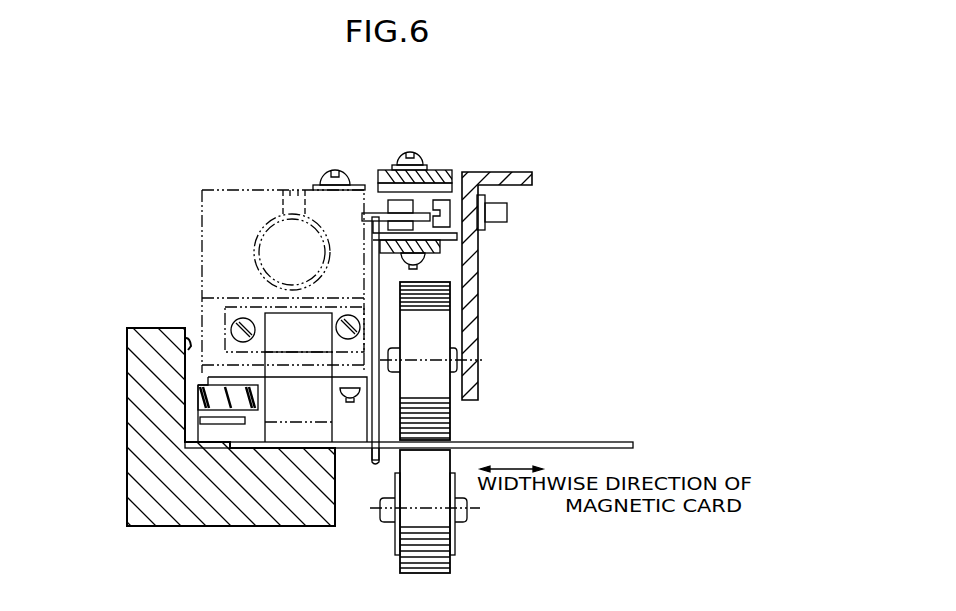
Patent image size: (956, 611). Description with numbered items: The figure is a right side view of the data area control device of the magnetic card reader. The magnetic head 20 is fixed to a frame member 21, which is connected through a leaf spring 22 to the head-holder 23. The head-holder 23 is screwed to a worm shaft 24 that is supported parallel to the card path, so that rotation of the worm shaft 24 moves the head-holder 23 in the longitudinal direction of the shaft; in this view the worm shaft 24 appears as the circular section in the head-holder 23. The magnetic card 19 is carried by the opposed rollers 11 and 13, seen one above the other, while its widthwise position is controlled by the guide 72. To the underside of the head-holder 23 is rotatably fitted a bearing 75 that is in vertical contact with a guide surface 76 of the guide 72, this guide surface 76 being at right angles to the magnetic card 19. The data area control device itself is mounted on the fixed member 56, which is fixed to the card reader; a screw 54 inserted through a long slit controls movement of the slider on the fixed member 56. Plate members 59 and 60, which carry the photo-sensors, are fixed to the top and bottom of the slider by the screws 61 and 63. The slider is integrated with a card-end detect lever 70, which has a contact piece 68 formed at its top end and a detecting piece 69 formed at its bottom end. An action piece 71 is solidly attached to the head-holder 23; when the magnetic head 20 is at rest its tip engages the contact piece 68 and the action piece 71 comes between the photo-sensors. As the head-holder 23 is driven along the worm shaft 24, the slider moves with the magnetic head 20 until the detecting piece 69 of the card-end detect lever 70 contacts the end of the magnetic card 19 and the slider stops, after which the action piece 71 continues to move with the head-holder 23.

The roller 11 is at (432, 538).
The roller 13 is at (437, 406).
The magnetic card 19 is at (574, 442).
The magnetic head 20 is at (307, 430).
The frame member 21 is at (233, 380).
The leaf spring 22 is at (250, 367).
The head-holder 23 is at (226, 215).
The worm shaft 24 is at (275, 250).
The screw 54 is at (497, 213).
The fixed member 56 is at (504, 181).
The plate member 59 is at (440, 180).
The plate member 60 is at (437, 248).
The screw 61 is at (418, 166).
The screw 63 is at (421, 262).
The contact piece 68 is at (428, 167).
The detecting piece 69 is at (374, 462).
The card-end detect lever 70 is at (373, 342).
The action piece 71 is at (372, 214).
The guide 72 is at (140, 478).
The bearing 75 is at (196, 393).
The guide surface 76 is at (189, 340).